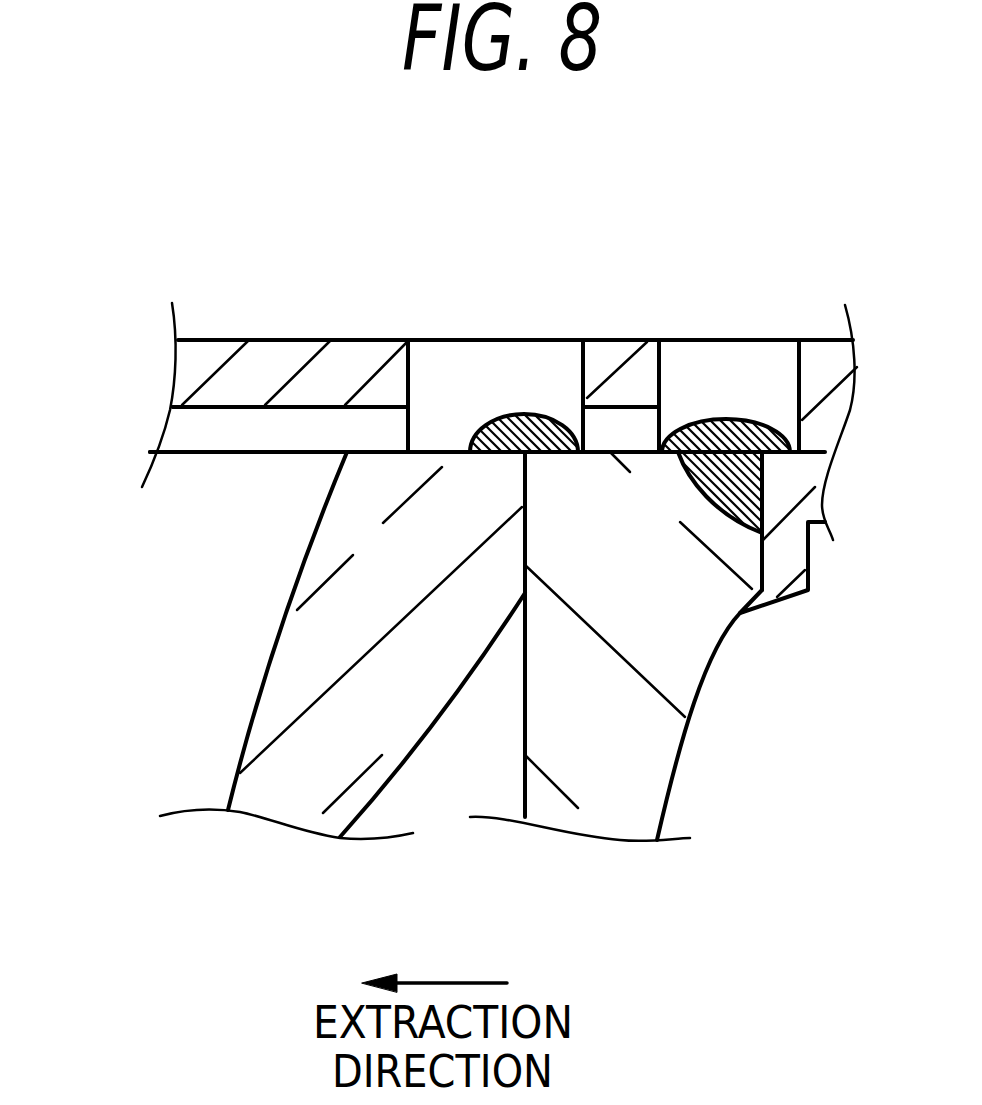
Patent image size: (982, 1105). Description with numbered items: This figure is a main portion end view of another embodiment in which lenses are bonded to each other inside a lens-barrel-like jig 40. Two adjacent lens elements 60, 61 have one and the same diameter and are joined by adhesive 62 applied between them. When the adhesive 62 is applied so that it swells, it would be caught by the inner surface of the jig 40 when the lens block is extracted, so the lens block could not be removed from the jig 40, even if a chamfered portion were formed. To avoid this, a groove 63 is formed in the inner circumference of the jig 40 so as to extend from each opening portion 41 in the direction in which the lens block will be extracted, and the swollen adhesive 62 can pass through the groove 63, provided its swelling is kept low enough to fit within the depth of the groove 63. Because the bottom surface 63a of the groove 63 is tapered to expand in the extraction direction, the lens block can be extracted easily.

The lens-barrel-like jig 40 is at (353, 347).
The opening portion 41 is at (455, 355).
The adhesive 62 is at (530, 414).
The groove 63 is at (204, 434).
The bottom surface of the groove 63a is at (251, 409).
The lens element 60 is at (285, 703).
The lens element 61 is at (653, 763).